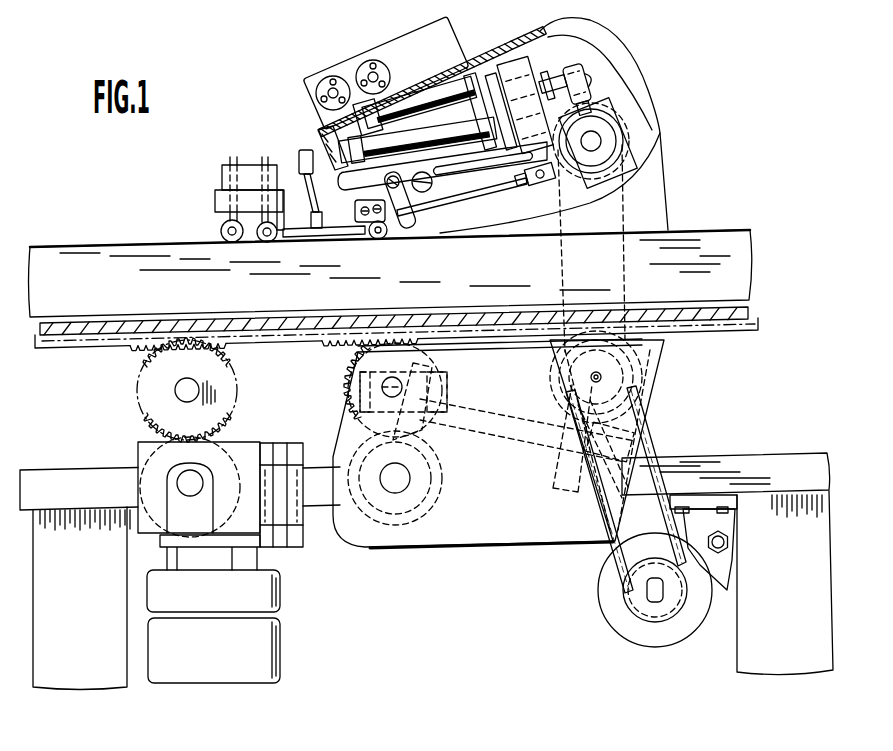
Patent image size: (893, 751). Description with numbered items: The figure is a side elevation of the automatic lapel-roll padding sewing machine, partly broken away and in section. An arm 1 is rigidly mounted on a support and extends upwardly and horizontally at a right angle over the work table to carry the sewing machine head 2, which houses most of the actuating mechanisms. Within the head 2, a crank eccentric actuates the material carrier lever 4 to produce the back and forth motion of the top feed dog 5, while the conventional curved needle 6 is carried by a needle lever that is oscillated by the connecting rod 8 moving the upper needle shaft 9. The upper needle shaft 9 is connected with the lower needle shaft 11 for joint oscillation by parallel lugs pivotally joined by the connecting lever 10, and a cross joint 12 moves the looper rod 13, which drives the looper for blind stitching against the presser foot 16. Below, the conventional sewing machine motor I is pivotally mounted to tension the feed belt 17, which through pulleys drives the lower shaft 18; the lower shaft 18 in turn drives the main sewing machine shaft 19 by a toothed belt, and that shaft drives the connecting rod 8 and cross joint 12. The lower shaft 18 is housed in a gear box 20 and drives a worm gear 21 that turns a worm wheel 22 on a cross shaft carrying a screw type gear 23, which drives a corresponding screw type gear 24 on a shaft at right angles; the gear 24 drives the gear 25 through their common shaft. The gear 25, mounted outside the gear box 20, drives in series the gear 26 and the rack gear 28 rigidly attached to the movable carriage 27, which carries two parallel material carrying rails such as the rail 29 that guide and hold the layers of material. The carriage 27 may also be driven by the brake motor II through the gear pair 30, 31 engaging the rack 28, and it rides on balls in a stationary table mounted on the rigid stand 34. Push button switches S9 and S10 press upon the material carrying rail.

The arm 1 is at (664, 182).
The sewing machine head 2 is at (545, 31).
The material carrier lever 4 is at (468, 185).
The top feed dog 5 is at (368, 203).
The curved needle 6 is at (306, 150).
The connecting rod 8 is at (567, 68).
The upper needle shaft 9 is at (452, 98).
The connecting lever 10 is at (505, 158).
The lower needle shaft 11 is at (412, 150).
The cross joint 12 is at (556, 184).
The looper rod 13 is at (433, 222).
The presser foot 16 is at (322, 238).
The feed belt 17 is at (656, 446).
The lower shaft 18 is at (598, 377).
The main sewing machine shaft 19 is at (592, 143).
The gear box 20 is at (652, 394).
The worm gear 21 is at (555, 370).
The worm wheel 22 is at (553, 478).
The screw type gear 23 is at (437, 373).
The screw type gear 24 is at (437, 471).
The gear 25 is at (445, 498).
The gear 26 is at (340, 392).
The movable carriage 27 is at (708, 314).
The rack gear 28 is at (330, 345).
The material carrying rail 29 is at (735, 281).
The gear 30 is at (140, 458).
The gear 31 is at (147, 370).
The rigid stand 34 is at (737, 467).
The push button switch S9 is at (221, 230).
The push button switch S10 is at (270, 240).
The sewing machine motor I is at (598, 596).
The brake motor II is at (268, 583).